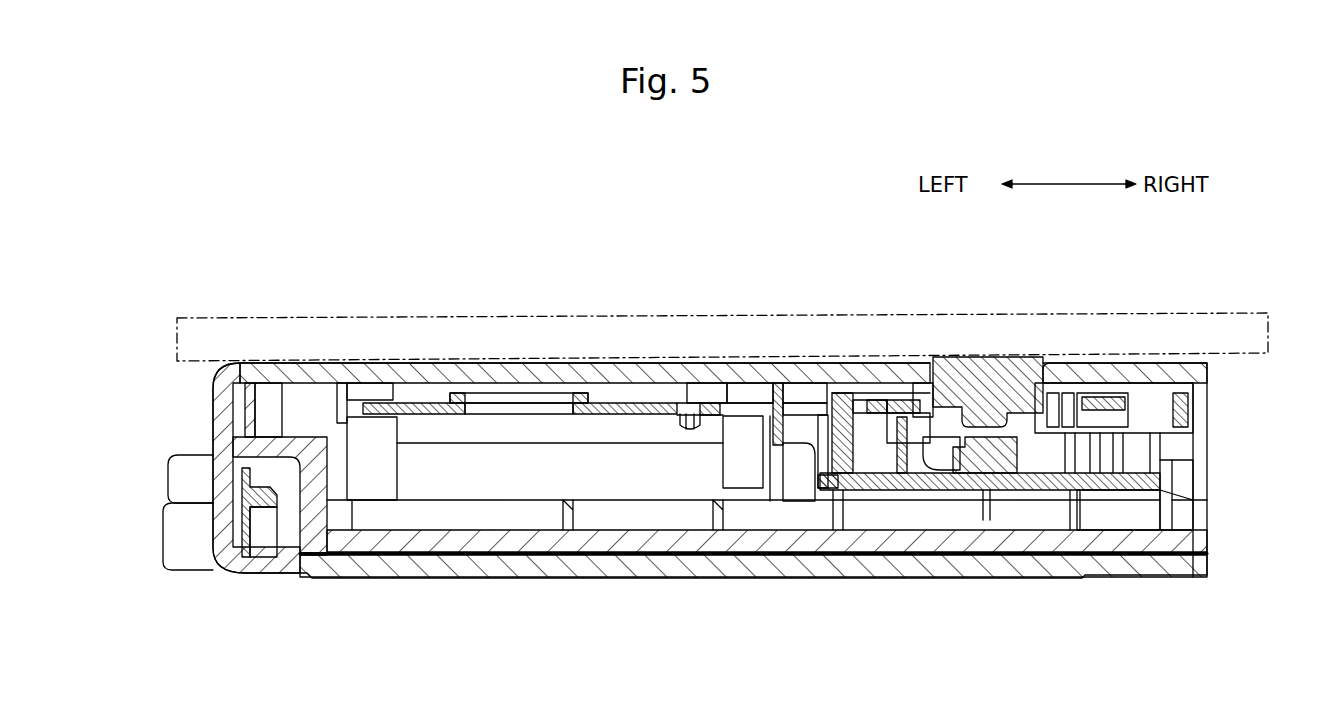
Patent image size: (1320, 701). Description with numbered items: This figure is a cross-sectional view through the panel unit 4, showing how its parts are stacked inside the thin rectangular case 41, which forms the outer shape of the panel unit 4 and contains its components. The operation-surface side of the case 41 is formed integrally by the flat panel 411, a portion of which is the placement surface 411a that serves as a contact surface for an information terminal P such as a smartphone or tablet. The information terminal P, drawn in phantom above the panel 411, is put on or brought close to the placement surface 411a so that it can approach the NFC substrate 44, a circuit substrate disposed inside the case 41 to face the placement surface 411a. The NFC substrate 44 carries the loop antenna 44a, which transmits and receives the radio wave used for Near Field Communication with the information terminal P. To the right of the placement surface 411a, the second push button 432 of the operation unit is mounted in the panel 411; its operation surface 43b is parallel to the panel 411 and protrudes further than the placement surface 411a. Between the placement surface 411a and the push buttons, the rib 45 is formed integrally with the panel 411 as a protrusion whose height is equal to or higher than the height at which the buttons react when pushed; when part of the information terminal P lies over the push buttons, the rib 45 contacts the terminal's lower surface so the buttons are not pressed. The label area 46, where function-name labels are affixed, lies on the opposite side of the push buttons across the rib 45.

The panel unit 4 is at (678, 465).
The case 41 is at (283, 590).
The panel 411 is at (1131, 363).
The placement surface 411a is at (508, 360).
The operation surface 43b is at (984, 357).
The second push button 432 is at (1029, 343).
The NFC substrate 44 is at (653, 405).
The loop antenna 44a is at (457, 392).
The rib 45 is at (922, 393).
The label area 46 is at (800, 363).
The information terminal P is at (283, 318).